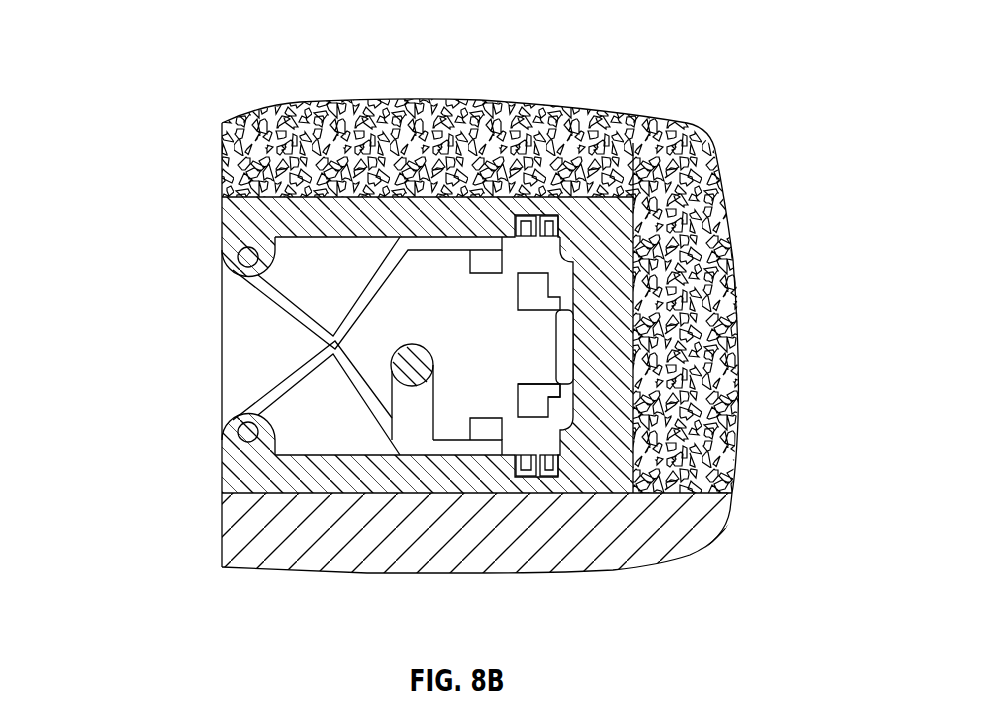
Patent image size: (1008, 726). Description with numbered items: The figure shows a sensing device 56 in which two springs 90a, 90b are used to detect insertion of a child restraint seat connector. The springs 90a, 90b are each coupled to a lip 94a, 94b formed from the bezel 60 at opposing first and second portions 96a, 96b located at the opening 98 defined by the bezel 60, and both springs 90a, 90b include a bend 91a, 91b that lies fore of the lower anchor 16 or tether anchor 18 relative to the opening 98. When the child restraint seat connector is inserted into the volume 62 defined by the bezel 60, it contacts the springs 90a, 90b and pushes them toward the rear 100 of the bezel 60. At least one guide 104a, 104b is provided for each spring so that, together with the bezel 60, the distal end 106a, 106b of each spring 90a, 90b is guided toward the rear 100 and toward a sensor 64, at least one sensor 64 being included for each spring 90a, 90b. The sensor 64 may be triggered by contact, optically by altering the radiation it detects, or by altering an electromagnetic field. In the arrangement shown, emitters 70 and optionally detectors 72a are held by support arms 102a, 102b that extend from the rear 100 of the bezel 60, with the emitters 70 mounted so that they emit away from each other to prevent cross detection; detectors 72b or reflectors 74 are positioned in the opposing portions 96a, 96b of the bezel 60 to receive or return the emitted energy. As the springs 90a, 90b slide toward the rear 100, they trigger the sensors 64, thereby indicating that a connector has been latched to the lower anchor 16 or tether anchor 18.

The sensing device 56 is at (148, 75).
The bezel 60 is at (450, 198).
The volume 62 is at (360, 446).
The sensor 64 is at (633, 143).
The emitter 70 is at (689, 323).
The detector 72a is at (550, 230).
The detector 72b is at (525, 218).
The reflector 74 is at (545, 217).
The spring 90a is at (257, 288).
The spring 90b is at (257, 405).
The bend 91a is at (332, 333).
The bend 91b is at (333, 357).
The lip 94a is at (226, 258).
The lip 94b is at (226, 436).
The first portion 96a is at (243, 230).
The second portion 96b is at (243, 465).
The opening 98 is at (178, 350).
The rear 100 is at (547, 387).
The support arm 102a is at (537, 287).
The support arm 102b is at (543, 298).
The guide 104a is at (486, 273).
The guide 104b is at (488, 442).
The distal end 106a is at (458, 245).
The distal end 106b is at (527, 478).
The lower anchor 16 is at (463, 392).
The tether anchor 18 is at (433, 385).